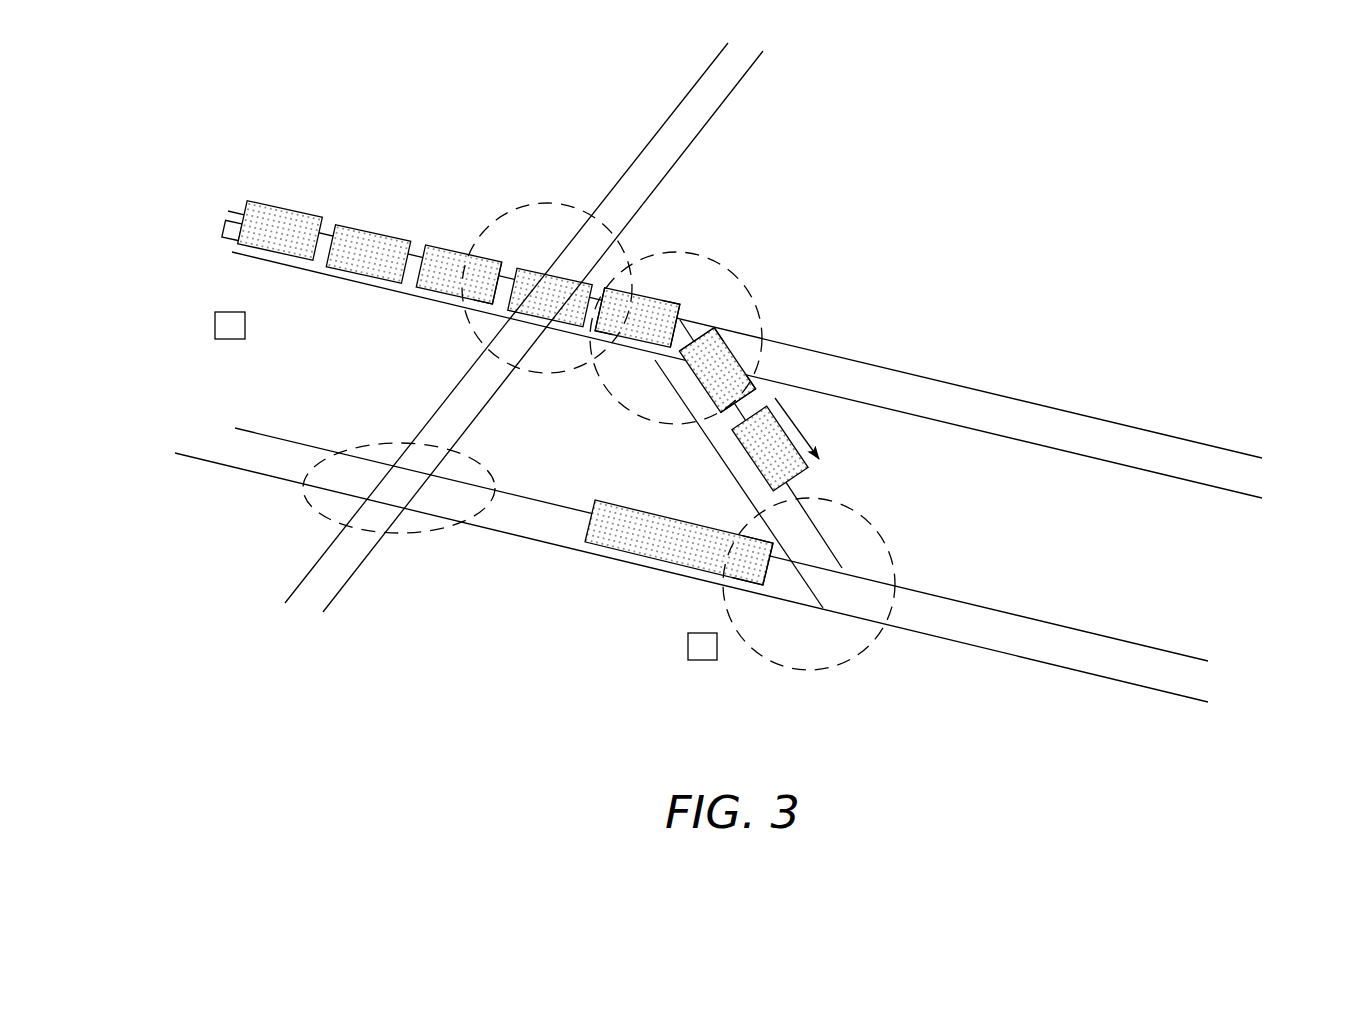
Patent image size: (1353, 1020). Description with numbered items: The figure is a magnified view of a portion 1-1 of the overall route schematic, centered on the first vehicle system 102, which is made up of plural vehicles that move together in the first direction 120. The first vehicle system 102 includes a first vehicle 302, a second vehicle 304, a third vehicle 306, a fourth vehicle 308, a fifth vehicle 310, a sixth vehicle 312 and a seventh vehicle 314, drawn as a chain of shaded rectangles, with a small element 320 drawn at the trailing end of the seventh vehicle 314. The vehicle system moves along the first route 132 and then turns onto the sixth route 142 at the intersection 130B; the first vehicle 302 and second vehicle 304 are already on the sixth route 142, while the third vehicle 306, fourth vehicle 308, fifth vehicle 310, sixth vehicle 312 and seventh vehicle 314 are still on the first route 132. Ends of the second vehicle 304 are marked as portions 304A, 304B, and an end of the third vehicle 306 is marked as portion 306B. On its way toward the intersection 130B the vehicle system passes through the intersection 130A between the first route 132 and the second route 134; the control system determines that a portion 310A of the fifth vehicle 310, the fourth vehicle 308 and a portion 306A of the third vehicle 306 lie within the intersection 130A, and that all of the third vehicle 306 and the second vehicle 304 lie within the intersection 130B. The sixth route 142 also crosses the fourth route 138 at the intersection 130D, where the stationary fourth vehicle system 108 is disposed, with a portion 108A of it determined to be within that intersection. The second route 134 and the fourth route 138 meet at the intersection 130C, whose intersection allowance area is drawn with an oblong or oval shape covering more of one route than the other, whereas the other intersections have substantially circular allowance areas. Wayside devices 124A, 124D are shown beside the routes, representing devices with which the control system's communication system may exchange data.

The first vehicle system 102 is at (502, 311).
The fourth vehicle system 108 is at (665, 564).
The portion of the fourth vehicle system 108A is at (747, 579).
The first direction 120 is at (804, 440).
The wayside device 124A is at (212, 327).
The wayside device 124D is at (702, 663).
The first intersection 130A is at (513, 206).
The second intersection 130B is at (722, 261).
The third intersection 130C is at (413, 529).
The fourth intersection 130D is at (849, 660).
The first route 132 is at (1150, 430).
The second route 134 is at (676, 95).
The fourth route 138 is at (1078, 669).
The sixth route 142 is at (836, 553).
The first vehicle 302 is at (751, 462).
The second vehicle 304 is at (701, 390).
The portion of the second vehicle 304A is at (753, 379).
The portion of the second vehicle 304B is at (718, 329).
The third vehicle 306 is at (643, 297).
The portion of the third vehicle 306A is at (613, 326).
The portion of the third vehicle 306B is at (673, 299).
The fourth vehicle 308 is at (568, 274).
The fifth vehicle 310 is at (440, 246).
The portion of the fifth vehicle 310A is at (474, 301).
The sixth vehicle 312 is at (363, 227).
The seventh vehicle 314 is at (285, 209).
The end-of-train device 320 is at (221, 231).
The portion 1-1 is at (1022, 214).